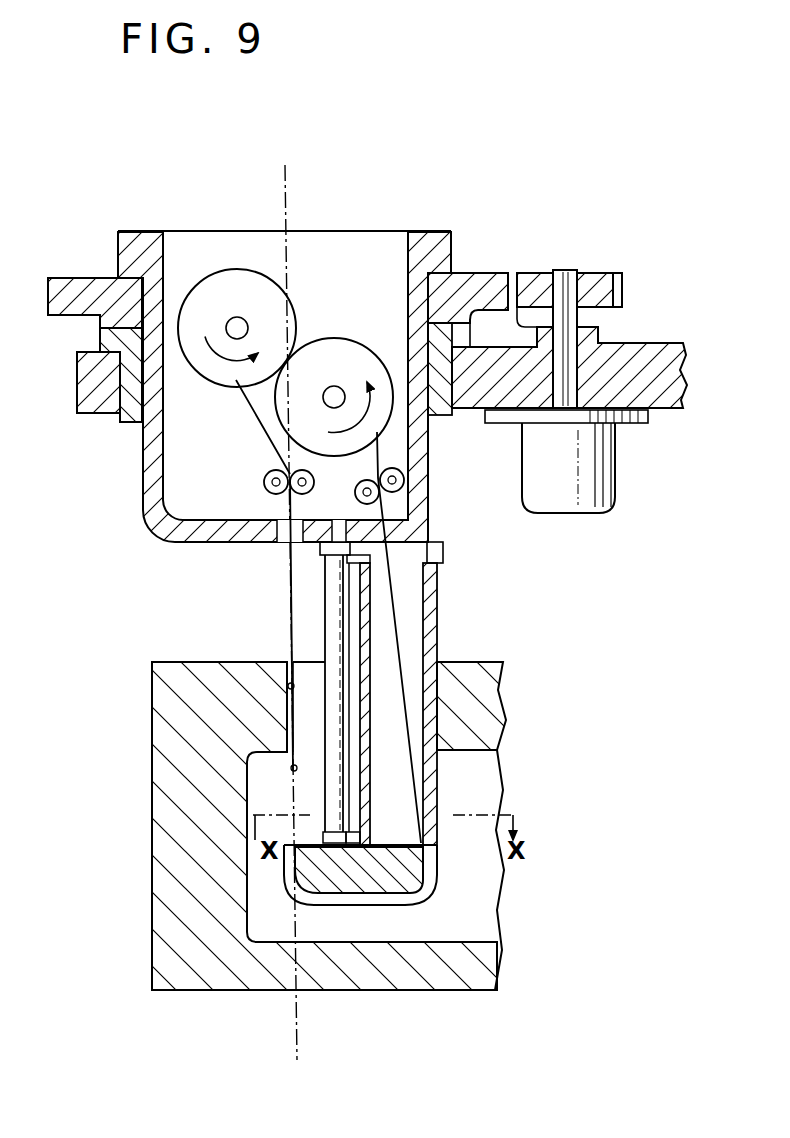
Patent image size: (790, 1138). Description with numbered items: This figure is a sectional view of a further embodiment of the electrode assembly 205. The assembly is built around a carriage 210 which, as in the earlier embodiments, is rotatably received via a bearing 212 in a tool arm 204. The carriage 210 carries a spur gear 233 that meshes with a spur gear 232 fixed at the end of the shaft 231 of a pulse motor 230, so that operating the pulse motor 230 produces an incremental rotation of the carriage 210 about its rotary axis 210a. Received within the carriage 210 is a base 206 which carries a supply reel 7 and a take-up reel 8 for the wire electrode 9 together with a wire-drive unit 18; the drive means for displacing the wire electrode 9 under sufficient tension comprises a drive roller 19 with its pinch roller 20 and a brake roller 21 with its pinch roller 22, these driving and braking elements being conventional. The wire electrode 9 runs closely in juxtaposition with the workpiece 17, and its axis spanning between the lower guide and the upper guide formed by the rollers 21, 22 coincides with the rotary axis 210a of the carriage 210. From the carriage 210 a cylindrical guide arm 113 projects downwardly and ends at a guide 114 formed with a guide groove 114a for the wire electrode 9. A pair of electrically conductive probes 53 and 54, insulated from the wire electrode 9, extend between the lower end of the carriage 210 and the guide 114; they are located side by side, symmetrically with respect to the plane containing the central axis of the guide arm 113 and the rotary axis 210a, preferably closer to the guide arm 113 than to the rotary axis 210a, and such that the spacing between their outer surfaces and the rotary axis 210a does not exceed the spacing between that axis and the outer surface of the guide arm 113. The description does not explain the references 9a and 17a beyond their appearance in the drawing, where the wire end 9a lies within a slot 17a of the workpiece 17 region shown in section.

The supply reel 7 is at (250, 288).
The take-up reel 8 is at (339, 348).
The wire electrode 9 is at (252, 412).
The wire end 9a is at (290, 768).
The workpiece 17 is at (162, 872).
The slot 17a is at (286, 686).
The wire-drive unit 18 is at (348, 496).
The drive roller 19 is at (404, 477).
The pinch roller 20 is at (380, 494).
The brake roller 21 is at (264, 480).
The pinch roller 22 is at (300, 491).
The electrically conductive probe 53 is at (278, 692).
The electrically conductive probe 54 is at (328, 608).
The cylindrical guide arm 113 is at (437, 608).
The guide 114 is at (398, 887).
The guide groove 114a is at (323, 900).
The tool arm 204 is at (77, 378).
The electrode assembly 205 is at (128, 576).
The base 206 is at (383, 240).
The carriage 210 is at (143, 512).
The rotary axis 210a is at (287, 204).
The bearing 212 is at (128, 424).
The pulse motor 230 is at (606, 468).
The shaft 231 is at (563, 284).
The spur gear 232 is at (600, 282).
The spur gear 233 is at (80, 290).